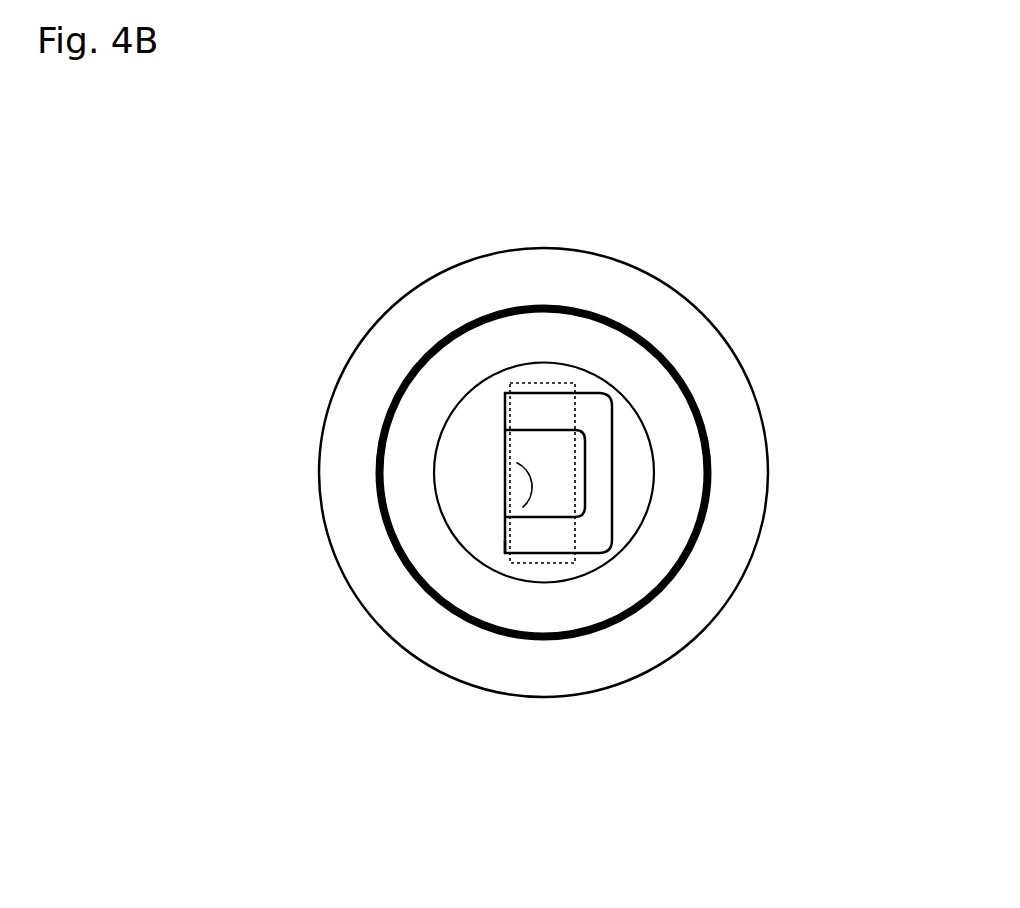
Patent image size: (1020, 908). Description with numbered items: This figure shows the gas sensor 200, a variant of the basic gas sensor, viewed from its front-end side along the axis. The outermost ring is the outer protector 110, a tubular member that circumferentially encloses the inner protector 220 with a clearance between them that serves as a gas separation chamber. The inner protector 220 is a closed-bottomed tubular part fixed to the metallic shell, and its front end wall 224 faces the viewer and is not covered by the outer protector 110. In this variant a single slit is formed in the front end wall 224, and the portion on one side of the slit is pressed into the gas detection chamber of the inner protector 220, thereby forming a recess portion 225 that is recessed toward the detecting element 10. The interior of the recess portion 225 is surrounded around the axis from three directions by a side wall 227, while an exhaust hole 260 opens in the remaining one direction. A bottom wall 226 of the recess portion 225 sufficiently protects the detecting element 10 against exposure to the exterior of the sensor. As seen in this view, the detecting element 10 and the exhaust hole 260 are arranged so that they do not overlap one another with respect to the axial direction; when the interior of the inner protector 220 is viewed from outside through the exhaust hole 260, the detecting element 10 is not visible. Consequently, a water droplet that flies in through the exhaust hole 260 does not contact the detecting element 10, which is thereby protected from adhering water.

The gas sensor 200 is at (778, 223).
The outer protector 110 is at (768, 432).
The inner protector 220 is at (683, 348).
The front end wall 224 is at (466, 452).
The recess portion 225 is at (596, 405).
The bottom wall 226 is at (552, 472).
The side wall 227 is at (538, 414).
The exhaust hole 260 is at (505, 540).
The detecting element 10 is at (505, 478).